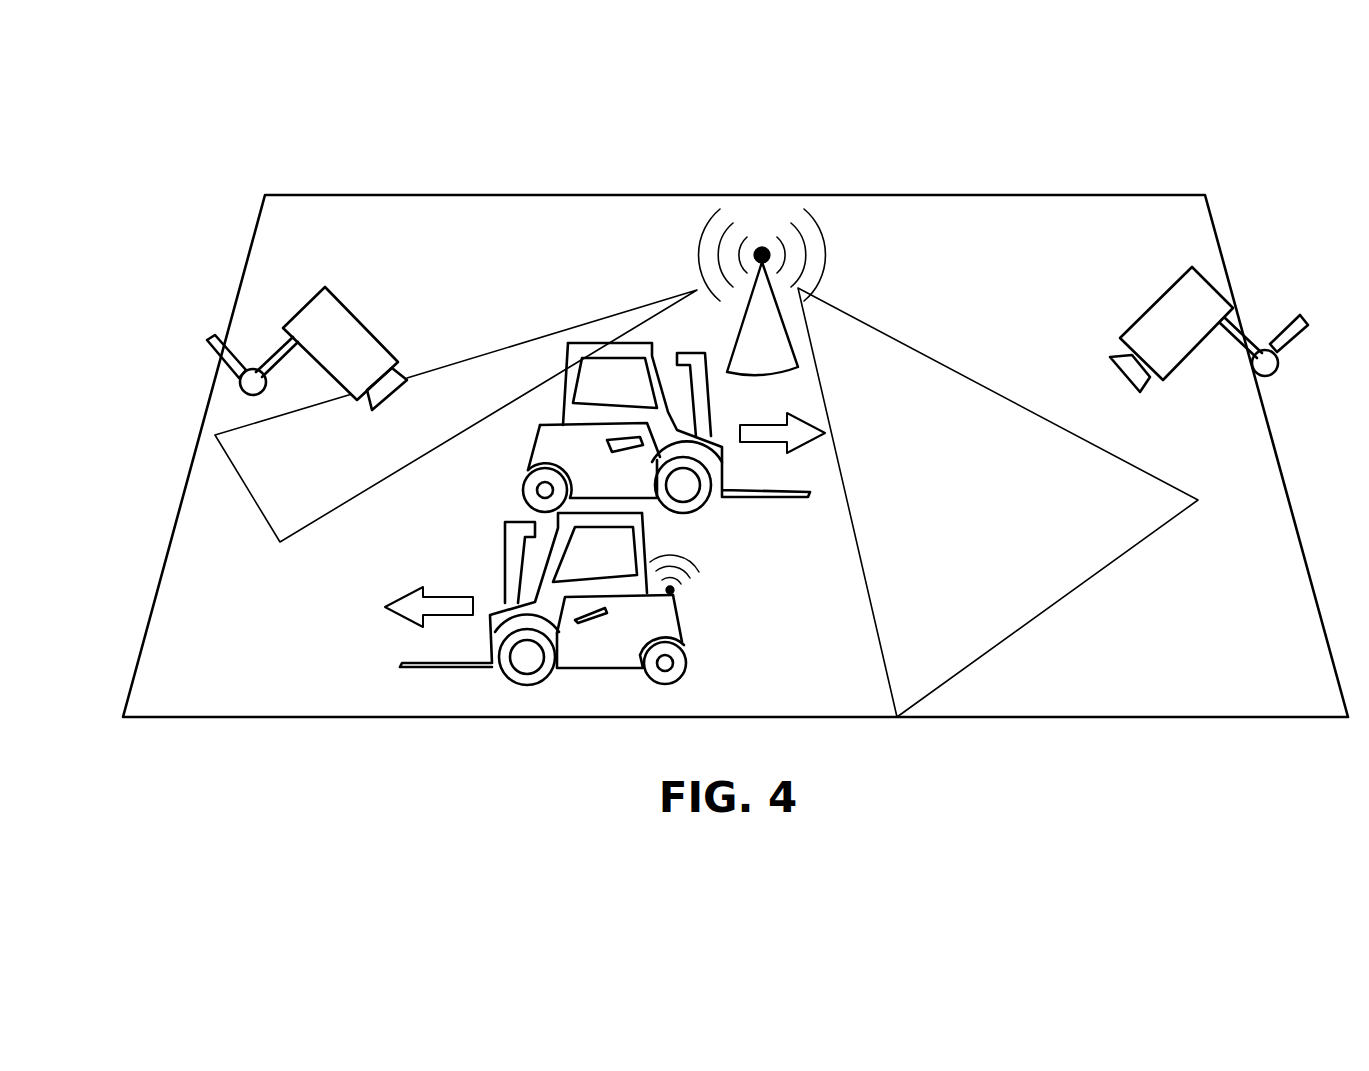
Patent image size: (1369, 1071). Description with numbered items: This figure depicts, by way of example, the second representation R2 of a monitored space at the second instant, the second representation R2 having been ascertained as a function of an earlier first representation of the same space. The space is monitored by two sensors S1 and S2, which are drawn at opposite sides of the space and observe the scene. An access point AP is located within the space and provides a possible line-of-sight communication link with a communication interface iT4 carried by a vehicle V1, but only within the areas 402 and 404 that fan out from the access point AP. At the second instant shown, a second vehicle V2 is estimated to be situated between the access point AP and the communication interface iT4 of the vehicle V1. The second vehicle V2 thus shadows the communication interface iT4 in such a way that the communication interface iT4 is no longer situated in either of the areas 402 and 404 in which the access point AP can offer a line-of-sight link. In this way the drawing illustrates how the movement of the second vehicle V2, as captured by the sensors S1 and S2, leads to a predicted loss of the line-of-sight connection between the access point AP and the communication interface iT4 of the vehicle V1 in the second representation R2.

The second representation R2 is at (410, 152).
The access point AP is at (763, 248).
The sensor S2 is at (352, 332).
The sensor S1 is at (1162, 313).
The second vehicle V2 is at (600, 368).
The vehicle V1 is at (672, 628).
The area 402 is at (265, 493).
The area 404 is at (962, 378).
The communication interface iT4 is at (708, 577).